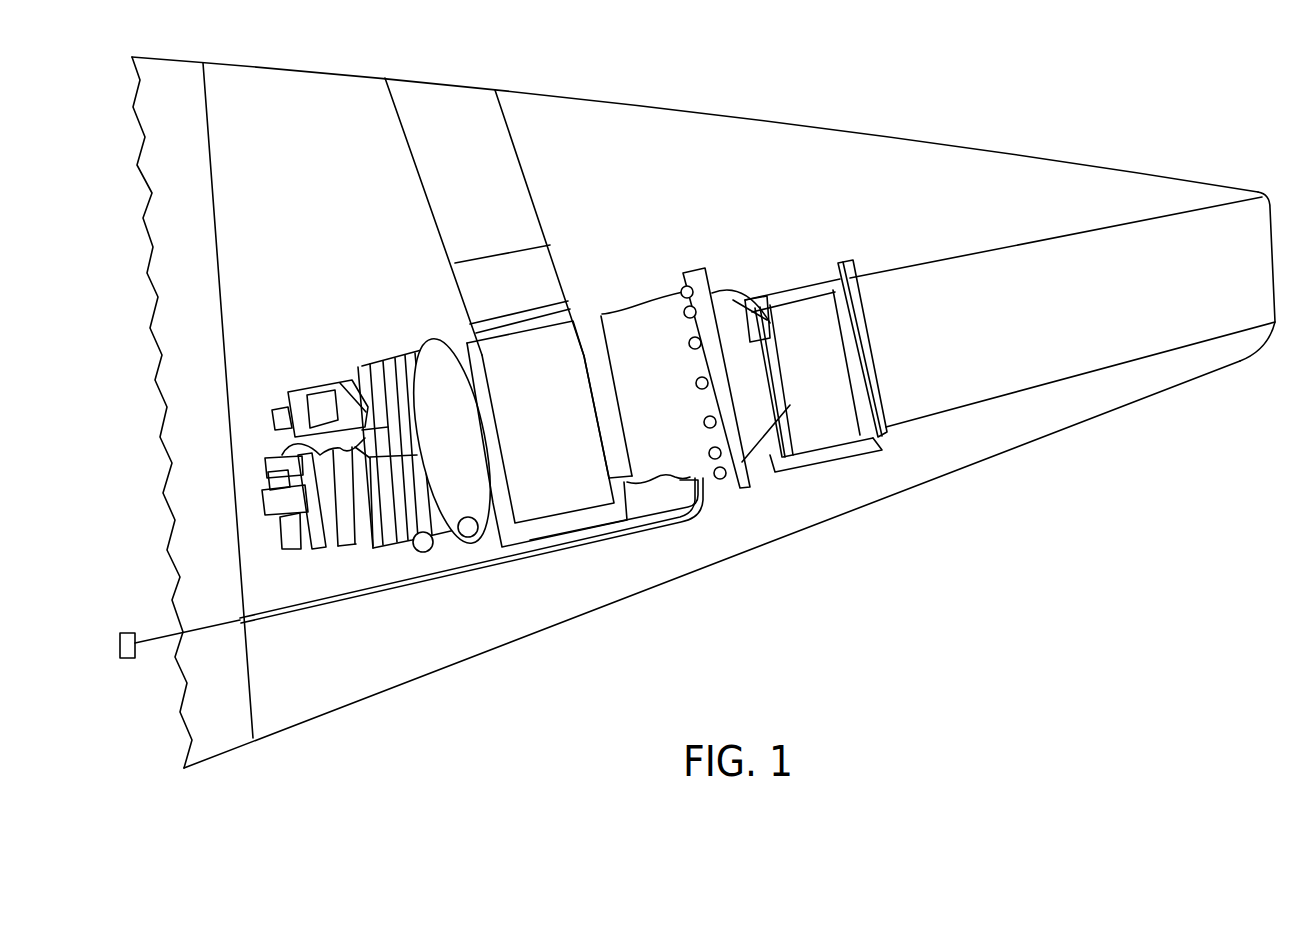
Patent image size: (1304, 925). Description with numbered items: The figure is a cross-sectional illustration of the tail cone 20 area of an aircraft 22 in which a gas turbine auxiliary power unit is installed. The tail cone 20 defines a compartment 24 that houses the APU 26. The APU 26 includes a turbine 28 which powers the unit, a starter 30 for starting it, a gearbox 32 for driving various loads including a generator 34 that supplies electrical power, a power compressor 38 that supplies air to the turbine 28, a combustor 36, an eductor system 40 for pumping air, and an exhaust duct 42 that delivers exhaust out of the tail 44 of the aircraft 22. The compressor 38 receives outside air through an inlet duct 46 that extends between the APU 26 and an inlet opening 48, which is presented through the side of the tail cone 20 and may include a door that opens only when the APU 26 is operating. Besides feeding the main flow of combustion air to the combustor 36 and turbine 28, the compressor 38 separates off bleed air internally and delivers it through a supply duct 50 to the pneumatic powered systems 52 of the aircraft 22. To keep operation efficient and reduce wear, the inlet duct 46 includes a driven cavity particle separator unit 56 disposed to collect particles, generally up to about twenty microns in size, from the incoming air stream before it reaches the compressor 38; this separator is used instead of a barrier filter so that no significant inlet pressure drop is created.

The tail cone 20 is at (1047, 160).
The aircraft 22 is at (175, 58).
The compartment 24 is at (880, 168).
The APU 26 is at (495, 377).
The turbine 28 is at (712, 292).
The starter 30 is at (315, 395).
The gearbox 32 is at (342, 543).
The generator 34 is at (318, 545).
The combustor 36 is at (645, 306).
The power compressor 38 is at (547, 434).
The eductor system 40 is at (799, 327).
The exhaust duct 42 is at (1090, 372).
The tail 44 is at (1260, 190).
The inlet duct 46 is at (525, 160).
The inlet opening 48 is at (447, 88).
The supply duct 50 is at (425, 582).
The pneumatic powered systems 52 is at (125, 660).
The driven cavity particle separator unit 56 is at (465, 302).